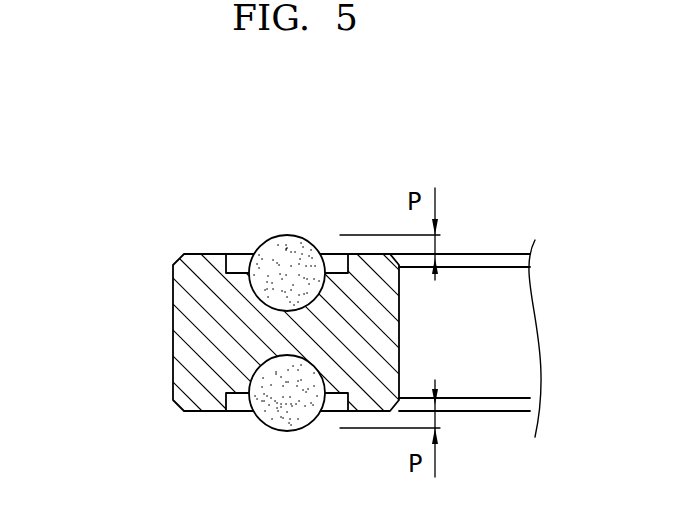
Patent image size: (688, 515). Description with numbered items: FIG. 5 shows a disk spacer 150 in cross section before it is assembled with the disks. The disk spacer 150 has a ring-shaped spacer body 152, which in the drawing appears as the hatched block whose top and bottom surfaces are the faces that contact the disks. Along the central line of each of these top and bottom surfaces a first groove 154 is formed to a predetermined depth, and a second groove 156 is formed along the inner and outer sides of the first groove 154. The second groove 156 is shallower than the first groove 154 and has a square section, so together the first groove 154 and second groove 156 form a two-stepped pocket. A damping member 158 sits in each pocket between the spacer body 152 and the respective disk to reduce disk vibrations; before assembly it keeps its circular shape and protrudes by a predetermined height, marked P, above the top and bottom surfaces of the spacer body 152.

The disk spacer 150 is at (155, 272).
The spacer body 152 is at (193, 327).
The first groove 154 is at (283, 309).
The second groove 156 is at (238, 262).
The damping member 158 is at (285, 260).